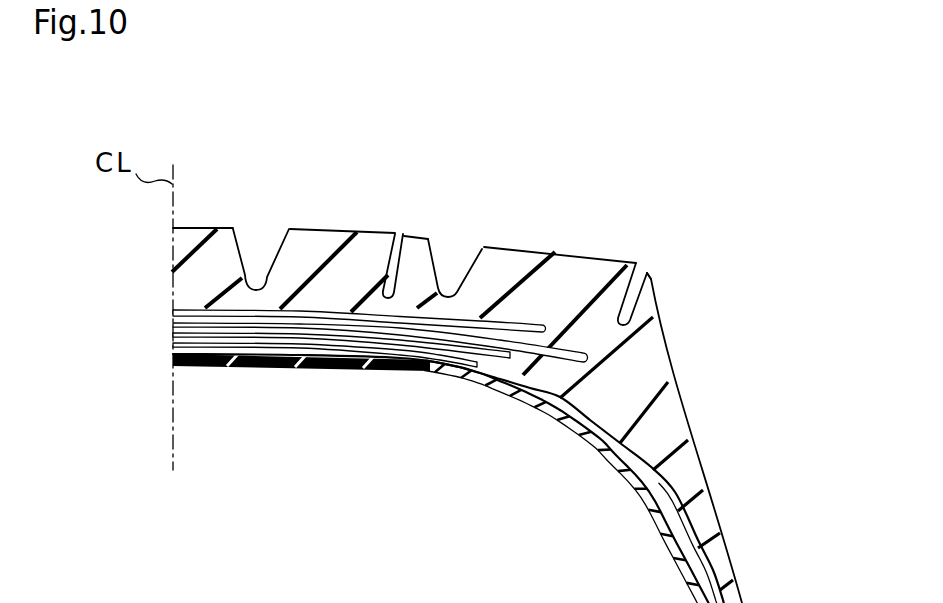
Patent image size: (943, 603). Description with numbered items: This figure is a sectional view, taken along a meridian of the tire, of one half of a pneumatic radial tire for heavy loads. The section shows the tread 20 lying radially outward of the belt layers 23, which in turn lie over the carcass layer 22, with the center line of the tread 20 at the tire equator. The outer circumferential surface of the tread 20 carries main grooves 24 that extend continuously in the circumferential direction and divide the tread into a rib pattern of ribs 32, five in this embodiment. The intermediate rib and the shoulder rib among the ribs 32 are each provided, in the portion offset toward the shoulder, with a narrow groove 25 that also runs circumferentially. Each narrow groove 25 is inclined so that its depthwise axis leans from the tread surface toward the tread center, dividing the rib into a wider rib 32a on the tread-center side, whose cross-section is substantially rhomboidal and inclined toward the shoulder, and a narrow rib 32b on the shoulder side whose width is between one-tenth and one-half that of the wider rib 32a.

The tread 20 is at (522, 238).
The carcass layer 22 is at (175, 349).
The belt layers 23 is at (174, 343).
The main grooves 24 is at (258, 268).
The narrow grooves 25 is at (400, 232).
The ribs 32 is at (203, 227).
The wider ribs 32a is at (321, 238).
The narrow ribs 32b is at (426, 238).